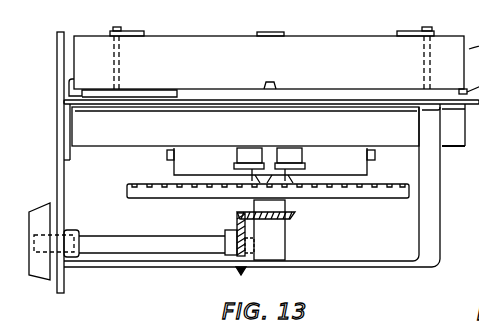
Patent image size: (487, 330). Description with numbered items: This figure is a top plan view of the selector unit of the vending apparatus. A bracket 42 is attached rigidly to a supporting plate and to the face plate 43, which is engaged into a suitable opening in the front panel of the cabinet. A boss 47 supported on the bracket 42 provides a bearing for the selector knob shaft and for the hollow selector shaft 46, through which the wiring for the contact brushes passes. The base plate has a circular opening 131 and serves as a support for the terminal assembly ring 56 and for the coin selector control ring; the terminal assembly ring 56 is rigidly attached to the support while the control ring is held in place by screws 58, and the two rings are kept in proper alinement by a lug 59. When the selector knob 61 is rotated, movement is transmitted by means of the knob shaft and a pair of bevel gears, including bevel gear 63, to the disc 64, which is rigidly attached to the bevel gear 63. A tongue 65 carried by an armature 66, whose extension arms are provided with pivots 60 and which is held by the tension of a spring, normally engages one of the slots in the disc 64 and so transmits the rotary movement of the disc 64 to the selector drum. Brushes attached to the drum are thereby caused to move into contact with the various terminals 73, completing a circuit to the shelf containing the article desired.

The bracket 42 is at (439, 204).
The face plate 43 is at (55, 115).
The hollow selector shaft 46 is at (270, 28).
The boss 47 is at (288, 240).
The terminal assembly ring 56 is at (175, 84).
The screws 58 is at (118, 26).
The lug 59 is at (268, 79).
The pivots 60 is at (165, 154).
The selector knob 61 is at (48, 200).
The bevel gear 63 is at (293, 213).
The disc 64 is at (372, 195).
The tongue 65 is at (265, 177).
The armature 66 is at (249, 164).
The terminals 73 is at (71, 77).
The circular opening 131 is at (119, 67).